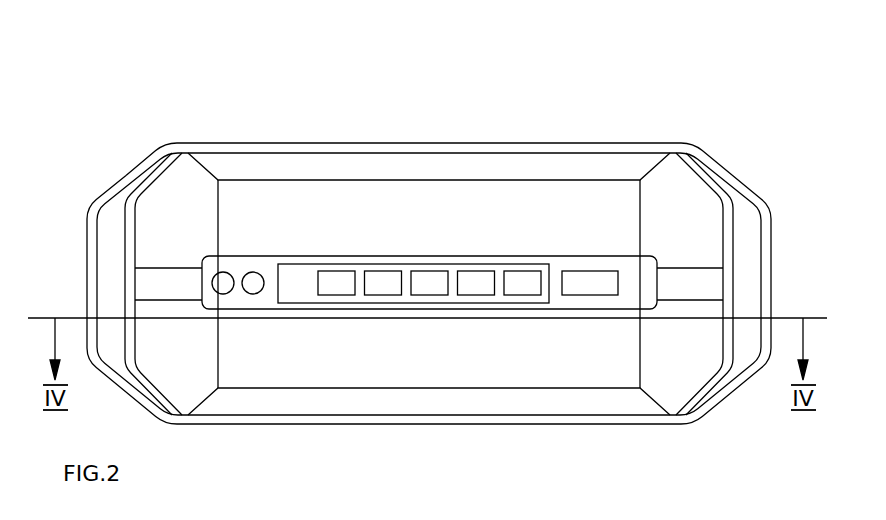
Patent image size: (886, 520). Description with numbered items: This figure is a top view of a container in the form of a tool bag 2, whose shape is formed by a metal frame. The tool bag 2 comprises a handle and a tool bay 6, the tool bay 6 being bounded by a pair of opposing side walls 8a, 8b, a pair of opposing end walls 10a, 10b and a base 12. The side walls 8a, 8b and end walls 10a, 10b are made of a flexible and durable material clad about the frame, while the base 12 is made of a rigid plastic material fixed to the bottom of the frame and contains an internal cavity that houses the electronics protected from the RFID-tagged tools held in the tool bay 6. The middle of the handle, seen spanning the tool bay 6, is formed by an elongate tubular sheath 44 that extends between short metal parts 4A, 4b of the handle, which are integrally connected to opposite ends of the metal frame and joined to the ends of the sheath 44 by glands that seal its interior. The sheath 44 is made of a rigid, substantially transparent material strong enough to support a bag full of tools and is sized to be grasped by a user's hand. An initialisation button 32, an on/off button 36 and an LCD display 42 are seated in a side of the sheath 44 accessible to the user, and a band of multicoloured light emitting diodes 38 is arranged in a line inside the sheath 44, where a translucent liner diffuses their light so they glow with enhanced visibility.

The tool bag 2 is at (340, 117).
The short metal part of the handle 4A is at (157, 278).
The short metal part of the handle 4b is at (690, 265).
The tool bay 6 is at (593, 222).
The side wall 8a is at (438, 425).
The side wall 8b is at (470, 142).
The end wall 10a is at (85, 248).
The end wall 10b is at (772, 230).
The base 12 is at (437, 228).
The initialisation button 32 is at (253, 290).
The on/off button 36 is at (223, 290).
The light emitting diodes 38 is at (336, 285).
The LCD display 42 is at (590, 284).
The sheath 44 is at (303, 257).